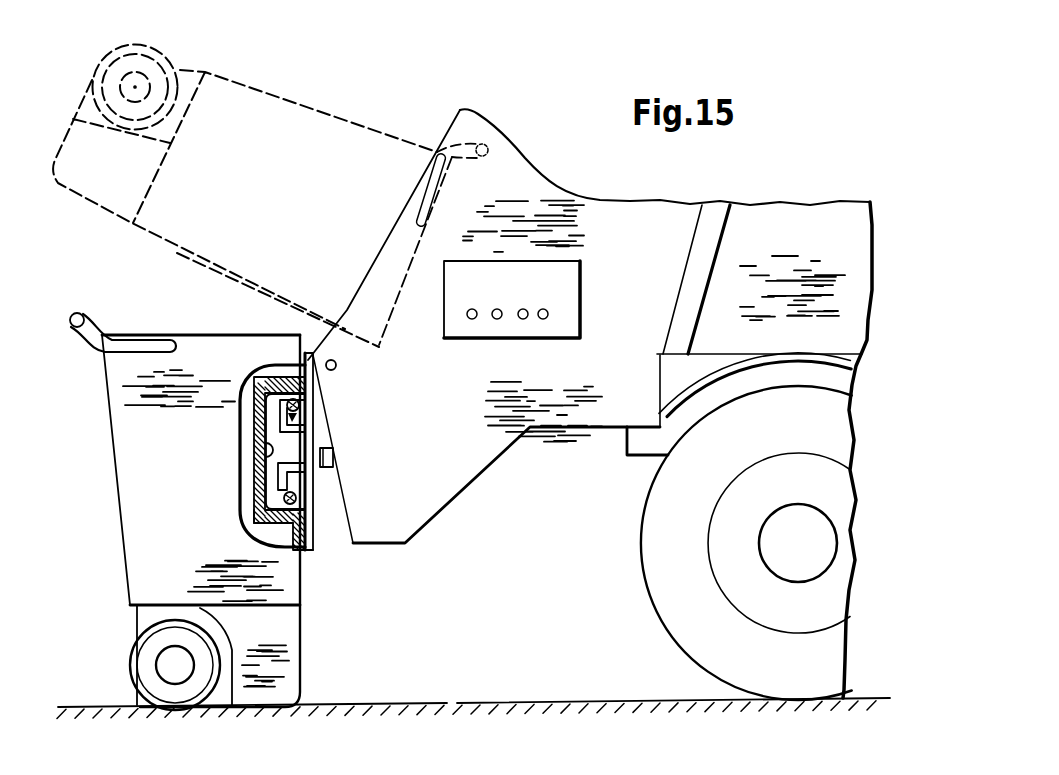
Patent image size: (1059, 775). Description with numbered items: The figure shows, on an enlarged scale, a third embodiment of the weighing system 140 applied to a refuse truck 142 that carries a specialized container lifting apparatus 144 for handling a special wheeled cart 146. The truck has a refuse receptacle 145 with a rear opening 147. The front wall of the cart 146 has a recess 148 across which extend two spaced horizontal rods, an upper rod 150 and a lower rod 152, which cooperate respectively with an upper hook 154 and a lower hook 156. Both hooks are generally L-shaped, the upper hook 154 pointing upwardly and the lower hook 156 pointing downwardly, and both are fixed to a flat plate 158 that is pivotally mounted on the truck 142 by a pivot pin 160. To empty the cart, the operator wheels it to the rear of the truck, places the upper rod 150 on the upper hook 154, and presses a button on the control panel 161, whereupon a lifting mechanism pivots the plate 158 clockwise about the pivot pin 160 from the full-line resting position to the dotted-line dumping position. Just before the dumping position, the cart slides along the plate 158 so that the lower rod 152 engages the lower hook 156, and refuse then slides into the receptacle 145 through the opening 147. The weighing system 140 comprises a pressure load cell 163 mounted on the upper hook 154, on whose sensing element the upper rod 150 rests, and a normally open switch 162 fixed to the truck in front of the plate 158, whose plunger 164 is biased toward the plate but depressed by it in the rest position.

The weighing system 140 is at (326, 569).
The refuse truck 142 is at (779, 196).
The container lifting apparatus 144 is at (345, 559).
The refuse receptacle 145 is at (537, 197).
The wheeled cart 146 is at (132, 512).
The rear opening 147 is at (374, 252).
The recess 148 is at (267, 452).
The upper rod 150 is at (299, 403).
The lower rod 152 is at (293, 497).
The upper hook 154 is at (263, 394).
The lower hook 156 is at (257, 484).
The flat plate 158 is at (317, 548).
The pivot pin 160 is at (337, 365).
The control panel 161 is at (562, 287).
The switch 162 is at (335, 455).
The pressure load cell 163 is at (301, 421).
The plunger 164 is at (268, 448).